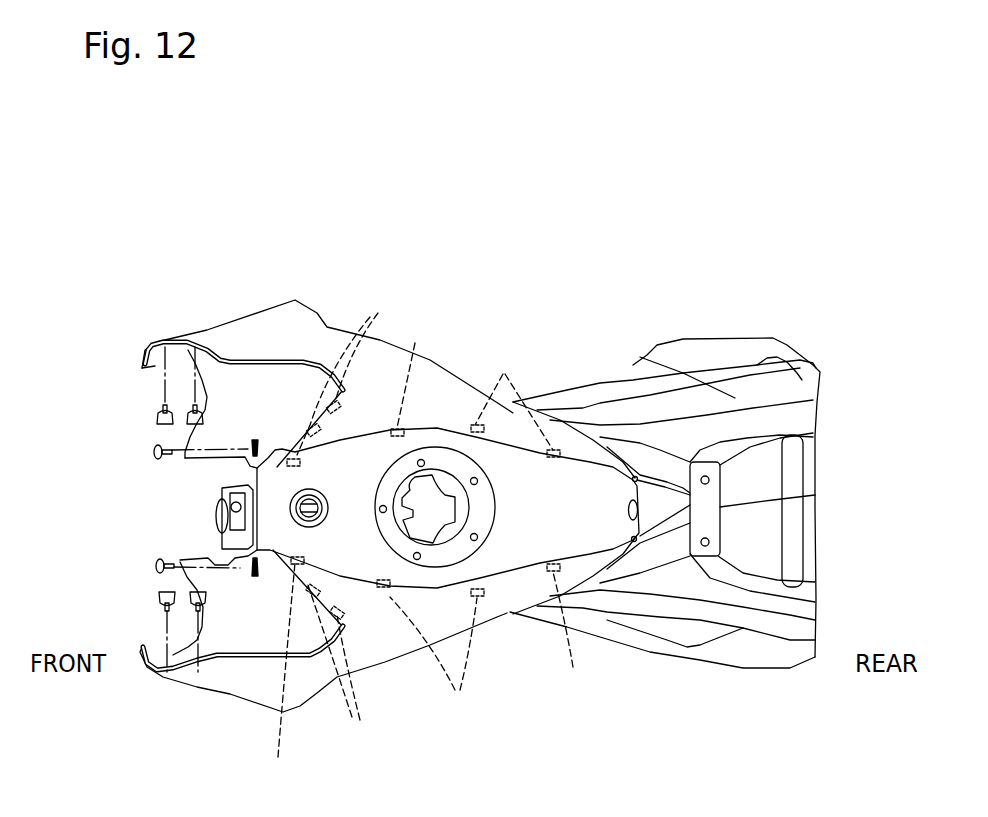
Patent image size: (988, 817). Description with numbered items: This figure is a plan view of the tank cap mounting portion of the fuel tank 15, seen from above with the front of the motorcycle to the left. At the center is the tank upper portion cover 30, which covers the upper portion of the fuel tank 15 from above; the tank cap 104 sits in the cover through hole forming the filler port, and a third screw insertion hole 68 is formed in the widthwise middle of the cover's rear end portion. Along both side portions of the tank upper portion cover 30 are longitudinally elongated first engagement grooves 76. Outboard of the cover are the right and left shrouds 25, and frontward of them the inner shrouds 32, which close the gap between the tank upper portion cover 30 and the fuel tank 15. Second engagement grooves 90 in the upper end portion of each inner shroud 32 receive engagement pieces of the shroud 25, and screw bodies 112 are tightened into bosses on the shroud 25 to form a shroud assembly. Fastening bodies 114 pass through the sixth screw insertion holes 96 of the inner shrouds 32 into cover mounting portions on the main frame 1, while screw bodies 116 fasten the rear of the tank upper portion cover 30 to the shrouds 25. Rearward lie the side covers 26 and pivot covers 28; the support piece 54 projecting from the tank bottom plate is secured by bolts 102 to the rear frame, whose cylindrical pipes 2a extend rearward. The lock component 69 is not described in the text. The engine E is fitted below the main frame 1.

The main frame 1 is at (222, 493).
The cylindrical pipe 2a is at (753, 427).
The fuel tank 15 is at (648, 463).
The shroud 25 is at (295, 300).
The side cover 26 is at (660, 393).
The pivot cover 28 is at (582, 393).
The tank upper portion cover 30 is at (500, 560).
The inner shroud 32 is at (230, 372).
The support piece 54 is at (710, 520).
The third screw insertion hole 68 is at (633, 507).
The lock 69 is at (322, 518).
The first engagement groove 76 is at (430, 550).
The second engagement groove 90 is at (348, 517).
The sixth screw insertion hole 96 is at (253, 440).
The bolt 102 is at (709, 481).
The tank cap 104 is at (463, 523).
The screw body 112 is at (193, 424).
The fastening body 114 is at (157, 452).
The screw body 116 is at (690, 500).
The engine E is at (682, 358).